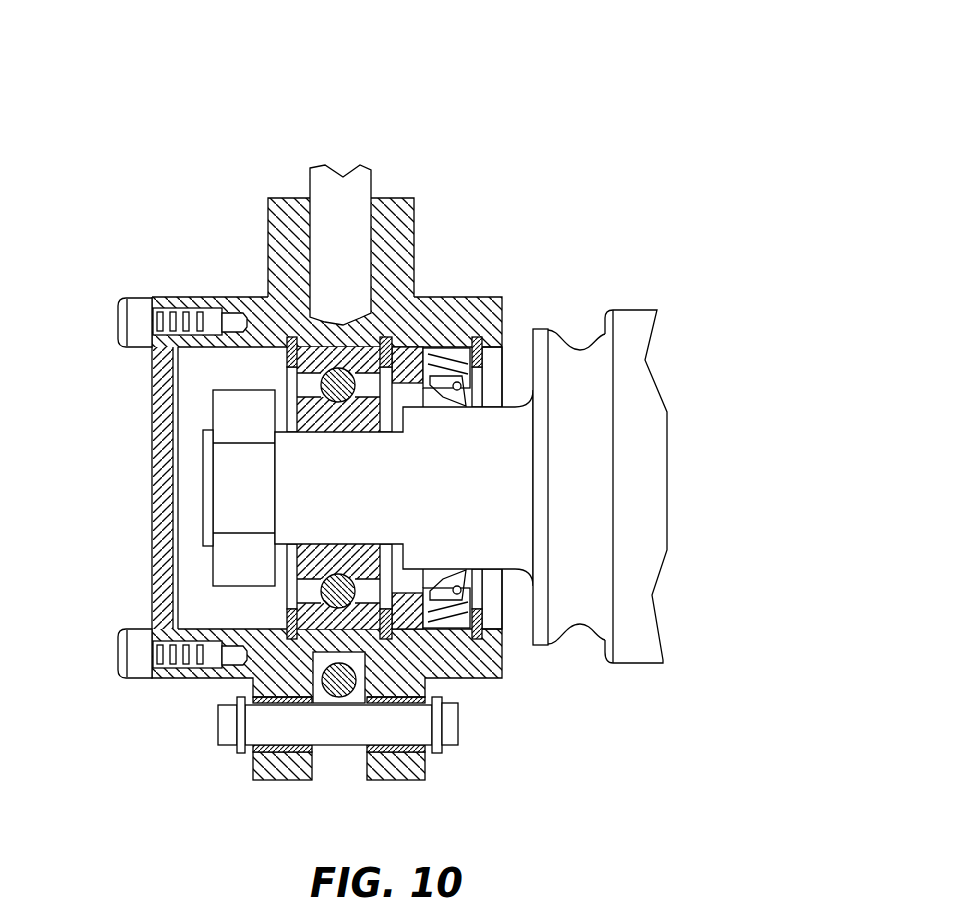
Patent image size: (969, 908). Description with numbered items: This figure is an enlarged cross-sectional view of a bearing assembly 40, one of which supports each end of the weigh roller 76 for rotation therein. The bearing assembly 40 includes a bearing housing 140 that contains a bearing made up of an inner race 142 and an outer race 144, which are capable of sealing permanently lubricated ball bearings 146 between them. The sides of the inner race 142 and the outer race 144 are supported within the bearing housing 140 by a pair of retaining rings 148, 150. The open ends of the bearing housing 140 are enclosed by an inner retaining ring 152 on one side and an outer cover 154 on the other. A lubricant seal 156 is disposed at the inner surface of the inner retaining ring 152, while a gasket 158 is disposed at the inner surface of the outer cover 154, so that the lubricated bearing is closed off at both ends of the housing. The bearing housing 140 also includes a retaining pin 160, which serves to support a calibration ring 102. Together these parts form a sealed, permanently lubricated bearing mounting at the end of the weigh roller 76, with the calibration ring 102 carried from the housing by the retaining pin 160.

The bearing assembly 40 is at (553, 100).
The weigh roller 76 is at (637, 290).
The calibration ring 102 is at (337, 698).
The bearing housing 140 is at (258, 238).
The inner race 142 is at (313, 413).
The outer race 144 is at (288, 370).
The ball bearings 146 is at (342, 326).
The retaining ring 148 is at (293, 340).
The retaining ring 150 is at (383, 340).
The inner retaining ring 152 is at (478, 340).
The outer cover 154 is at (152, 528).
The lubricant seal 156 is at (442, 336).
The gasket 158 is at (175, 700).
The retaining pin 160 is at (472, 721).